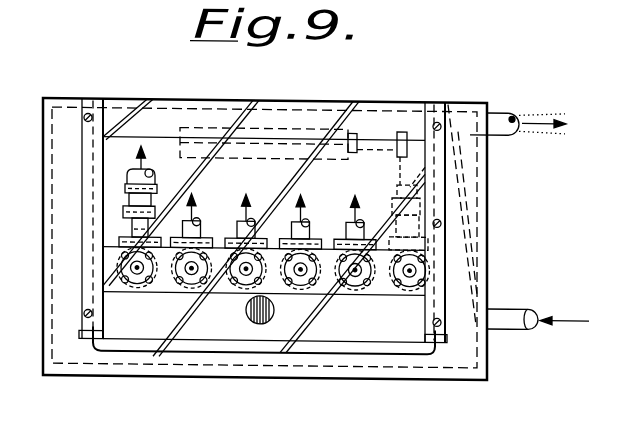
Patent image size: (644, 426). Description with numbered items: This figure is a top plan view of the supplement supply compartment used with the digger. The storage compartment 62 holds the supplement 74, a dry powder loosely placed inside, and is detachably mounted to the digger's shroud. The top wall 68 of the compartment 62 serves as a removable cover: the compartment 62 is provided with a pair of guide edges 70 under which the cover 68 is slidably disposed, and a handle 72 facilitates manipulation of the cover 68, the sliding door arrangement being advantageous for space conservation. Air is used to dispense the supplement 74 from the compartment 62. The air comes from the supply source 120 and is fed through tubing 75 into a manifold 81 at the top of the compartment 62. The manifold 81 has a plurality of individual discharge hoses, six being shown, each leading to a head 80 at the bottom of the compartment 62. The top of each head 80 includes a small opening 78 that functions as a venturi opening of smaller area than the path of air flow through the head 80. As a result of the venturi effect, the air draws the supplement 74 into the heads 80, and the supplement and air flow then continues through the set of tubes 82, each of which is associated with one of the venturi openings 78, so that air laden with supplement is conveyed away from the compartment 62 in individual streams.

The storage compartment 62 is at (416, 97).
The top wall 68 is at (293, 367).
The guide edges 70 is at (103, 340).
The handle 72 is at (258, 322).
The supplement 74 is at (530, 128).
The tubing 75 is at (500, 316).
The small openings 78 is at (352, 272).
The head 80 is at (120, 290).
The manifold 81 is at (218, 126).
The tubes 82 is at (495, 113).
The supply source 120 is at (560, 299).